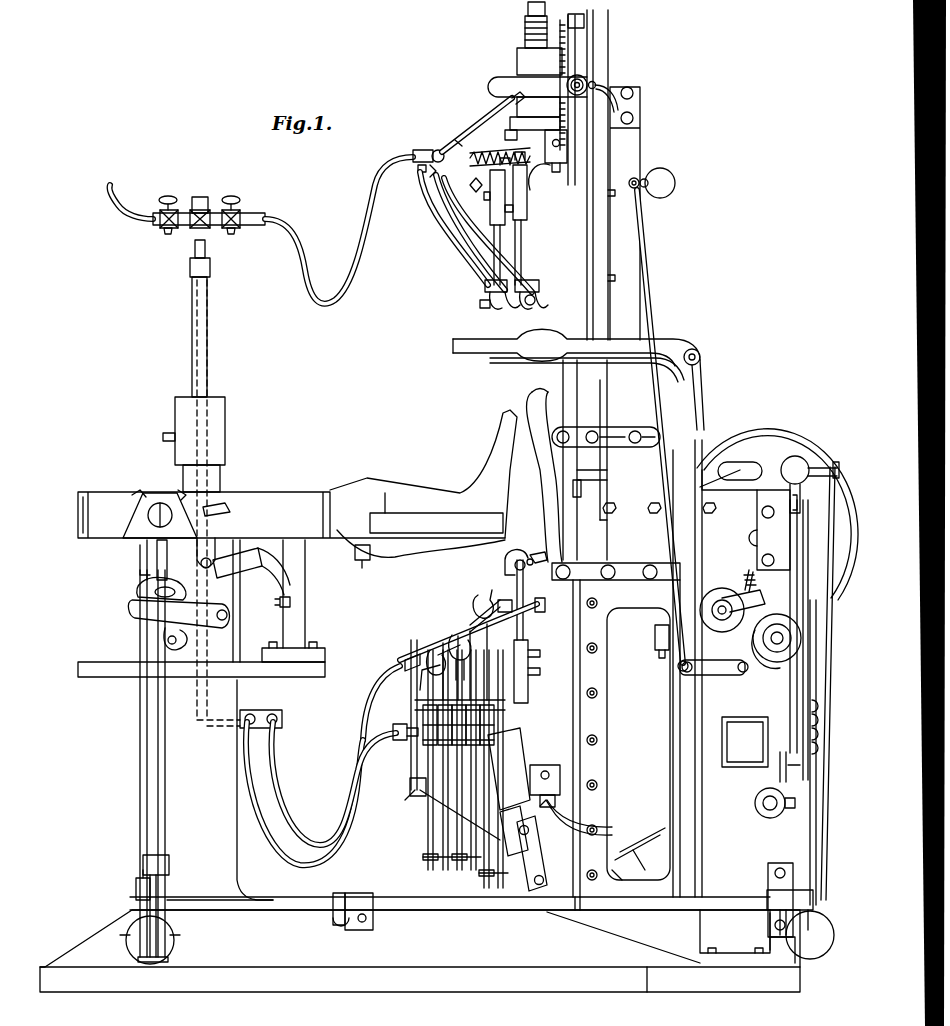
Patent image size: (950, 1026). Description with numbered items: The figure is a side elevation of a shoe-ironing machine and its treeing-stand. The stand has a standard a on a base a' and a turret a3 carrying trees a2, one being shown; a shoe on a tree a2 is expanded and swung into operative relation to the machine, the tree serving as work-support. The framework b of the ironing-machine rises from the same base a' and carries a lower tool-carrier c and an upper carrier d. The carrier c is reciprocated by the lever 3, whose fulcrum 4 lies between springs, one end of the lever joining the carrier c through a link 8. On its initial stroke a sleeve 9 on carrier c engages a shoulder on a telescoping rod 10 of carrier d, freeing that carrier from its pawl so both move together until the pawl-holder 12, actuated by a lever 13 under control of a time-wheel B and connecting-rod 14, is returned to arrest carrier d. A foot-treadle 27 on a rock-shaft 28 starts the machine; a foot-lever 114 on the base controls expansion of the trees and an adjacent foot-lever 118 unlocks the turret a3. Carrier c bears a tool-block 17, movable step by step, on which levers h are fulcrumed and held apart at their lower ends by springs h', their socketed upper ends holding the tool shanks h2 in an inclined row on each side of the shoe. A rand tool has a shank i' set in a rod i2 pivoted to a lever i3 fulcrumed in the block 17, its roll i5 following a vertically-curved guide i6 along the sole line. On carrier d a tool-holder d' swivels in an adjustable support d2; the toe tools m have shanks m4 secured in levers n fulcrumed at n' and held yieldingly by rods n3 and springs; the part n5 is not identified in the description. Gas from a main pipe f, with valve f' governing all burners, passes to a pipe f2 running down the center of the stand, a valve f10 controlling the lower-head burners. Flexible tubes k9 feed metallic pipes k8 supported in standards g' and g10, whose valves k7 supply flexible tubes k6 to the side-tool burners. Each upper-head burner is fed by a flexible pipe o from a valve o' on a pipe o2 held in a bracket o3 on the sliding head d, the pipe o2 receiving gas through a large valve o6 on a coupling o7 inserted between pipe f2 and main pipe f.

The standard a is at (246, 720).
The base a' is at (420, 944).
The tree a2 is at (438, 500).
The turret a3 is at (283, 478).
The framework b is at (597, 712).
The time-wheel B is at (752, 648).
The lower head or carrier c is at (560, 830).
The upper head or carrier d is at (559, 94).
The tool-holder d' is at (483, 118).
The adjustable support d2 is at (525, 32).
The main pipe f is at (131, 196).
The valve f' is at (168, 199).
The pipe f2 is at (207, 335).
The valve f10 is at (210, 248).
The standard g' is at (390, 709).
The standard g10 is at (545, 612).
The lever h is at (444, 769).
The spring h' is at (451, 855).
The shank h2 is at (418, 702).
The shank i' is at (533, 631).
The rod i2 is at (520, 725).
The lever i3 is at (503, 745).
The roll i5 is at (530, 550).
The vertically-curved guide i6 is at (550, 380).
The flexible tube k6 is at (505, 655).
The valve k7 is at (425, 655).
The metallic pipe k8 is at (455, 635).
The flexible tube k9 is at (315, 835).
The tool m is at (540, 302).
The shank m4 is at (521, 242).
The lever n is at (547, 174).
The fulcrum n' is at (520, 188).
The rod n3 is at (472, 140).
The pin n5 is at (470, 186).
The flexible pipe o is at (467, 232).
The valve o' is at (427, 173).
The pipe o2 is at (433, 152).
The bracket o3 is at (462, 142).
The large valve o6 is at (245, 210).
The coupling o7 is at (205, 207).
The lever 3 is at (645, 835).
The fulcrum 4 is at (140, 690).
The link 8 is at (528, 860).
The sleeve 9 is at (583, 470).
The rod 10 is at (586, 262).
The pawl-holder 12 is at (646, 175).
The lever 13 is at (720, 675).
The connecting-rod 14 is at (667, 300).
The tool-block 17 is at (410, 800).
The foot-treadle 27 is at (340, 925).
The rock-shaft 28 is at (577, 910).
The foot-lever 114 is at (169, 866).
The foot-lever 118 is at (136, 888).